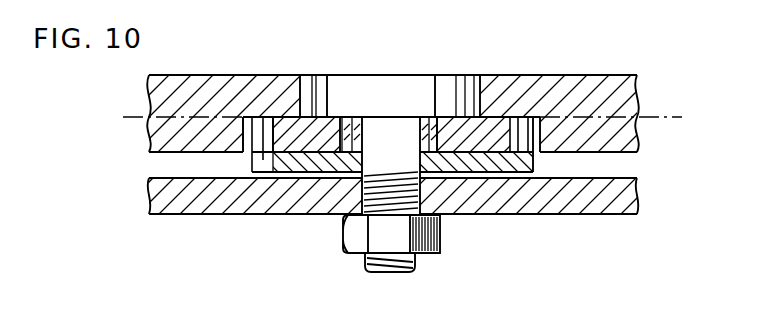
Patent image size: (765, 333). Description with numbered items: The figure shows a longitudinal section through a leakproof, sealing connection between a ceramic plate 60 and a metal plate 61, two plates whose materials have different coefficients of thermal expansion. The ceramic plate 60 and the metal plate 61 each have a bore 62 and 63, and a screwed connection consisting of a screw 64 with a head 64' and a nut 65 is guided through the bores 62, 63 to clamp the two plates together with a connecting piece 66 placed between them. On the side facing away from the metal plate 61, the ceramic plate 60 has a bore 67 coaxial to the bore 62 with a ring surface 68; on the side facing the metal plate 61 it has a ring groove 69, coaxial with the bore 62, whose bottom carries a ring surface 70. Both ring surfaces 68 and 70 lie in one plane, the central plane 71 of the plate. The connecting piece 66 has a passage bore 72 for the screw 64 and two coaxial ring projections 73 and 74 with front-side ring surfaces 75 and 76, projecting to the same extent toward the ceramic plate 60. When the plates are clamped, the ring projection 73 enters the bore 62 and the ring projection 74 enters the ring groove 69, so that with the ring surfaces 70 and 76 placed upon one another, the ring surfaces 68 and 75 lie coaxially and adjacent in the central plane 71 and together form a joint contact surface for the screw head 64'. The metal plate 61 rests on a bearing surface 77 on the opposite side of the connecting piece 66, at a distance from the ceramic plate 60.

The ceramic plate 60 is at (578, 87).
The metal plate 61 is at (628, 200).
The bore 62 is at (415, 185).
The bore 63 is at (445, 218).
The screw 64 is at (402, 285).
The head 64' is at (381, 110).
The nut 65 is at (360, 237).
The connecting piece 66 is at (497, 167).
The bore 67 is at (305, 115).
The ring surface 68 is at (315, 121).
The ring groove 69 is at (242, 145).
The ring surface 70 is at (243, 125).
The central plane 71 is at (672, 120).
The bore 72 is at (366, 117).
The ring projection 73 is at (441, 150).
The ring projection 74 is at (274, 170).
The ring surface 75 is at (421, 130).
The ring surface 76 is at (535, 165).
The bearing surface 77 is at (333, 176).